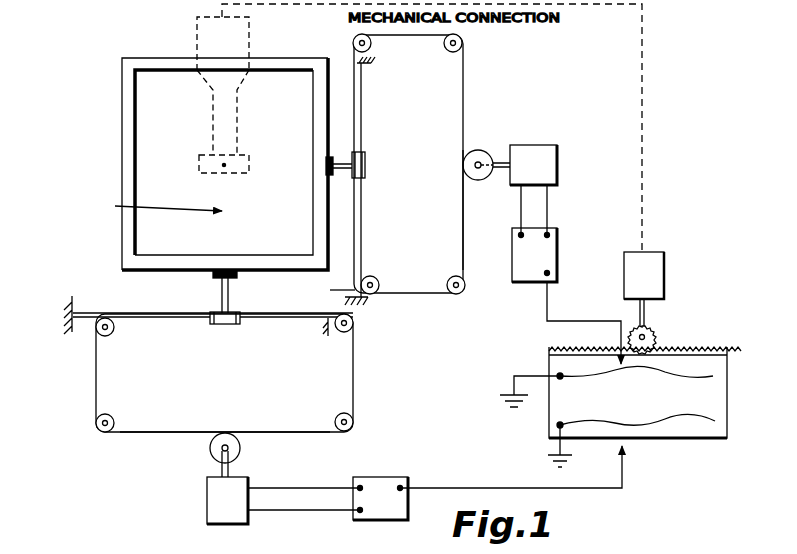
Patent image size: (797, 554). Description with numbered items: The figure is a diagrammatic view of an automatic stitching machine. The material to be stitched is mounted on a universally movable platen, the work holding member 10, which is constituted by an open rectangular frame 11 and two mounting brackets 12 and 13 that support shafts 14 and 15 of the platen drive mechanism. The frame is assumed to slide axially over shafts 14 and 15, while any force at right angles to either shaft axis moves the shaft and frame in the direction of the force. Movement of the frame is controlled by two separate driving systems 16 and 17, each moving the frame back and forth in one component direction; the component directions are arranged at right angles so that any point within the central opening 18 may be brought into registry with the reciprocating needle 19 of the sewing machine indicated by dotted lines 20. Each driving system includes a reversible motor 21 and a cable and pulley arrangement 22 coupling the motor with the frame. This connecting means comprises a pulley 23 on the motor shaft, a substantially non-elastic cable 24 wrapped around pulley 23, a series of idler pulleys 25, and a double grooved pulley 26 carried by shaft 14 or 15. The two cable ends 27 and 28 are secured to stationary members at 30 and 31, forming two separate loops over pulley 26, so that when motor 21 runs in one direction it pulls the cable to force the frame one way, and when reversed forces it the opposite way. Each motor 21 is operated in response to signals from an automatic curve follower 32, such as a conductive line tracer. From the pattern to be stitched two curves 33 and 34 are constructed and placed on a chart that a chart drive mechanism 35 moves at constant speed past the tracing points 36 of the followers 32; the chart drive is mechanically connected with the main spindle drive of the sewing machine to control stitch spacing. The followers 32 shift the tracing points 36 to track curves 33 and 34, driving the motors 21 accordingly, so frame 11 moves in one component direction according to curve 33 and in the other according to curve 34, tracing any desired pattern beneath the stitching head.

The work holding member 10 is at (123, 163).
The open rectangular frame 11 is at (127, 236).
The mounting bracket 12 is at (237, 277).
The mounting bracket 13 is at (332, 176).
The shaft 14 is at (222, 298).
The shaft 15 is at (342, 164).
The driving system 16 is at (224, 373).
The driving system 17 is at (408, 164).
The central opening 18 is at (154, 207).
The reciprocating needle 19 is at (224, 165).
The sewing machine 20 is at (197, 45).
The reversible motor 21 is at (207, 486).
The cable and pulley arrangement 22 is at (356, 375).
The pulley 23 is at (210, 452).
The cable 24 is at (166, 432).
The idler pulley 25 is at (109, 336).
The double grooved pulley 26 is at (232, 324).
The cable end 27 is at (88, 313).
The cable end 28 is at (383, 97).
The stationary member 30 is at (72, 330).
The stationary member 31 is at (329, 336).
The curve follower 32 is at (388, 476).
The curve 33 is at (593, 376).
The curve 34 is at (640, 420).
The chart drive mechanism 35 is at (646, 312).
The tracing point 36 is at (624, 360).